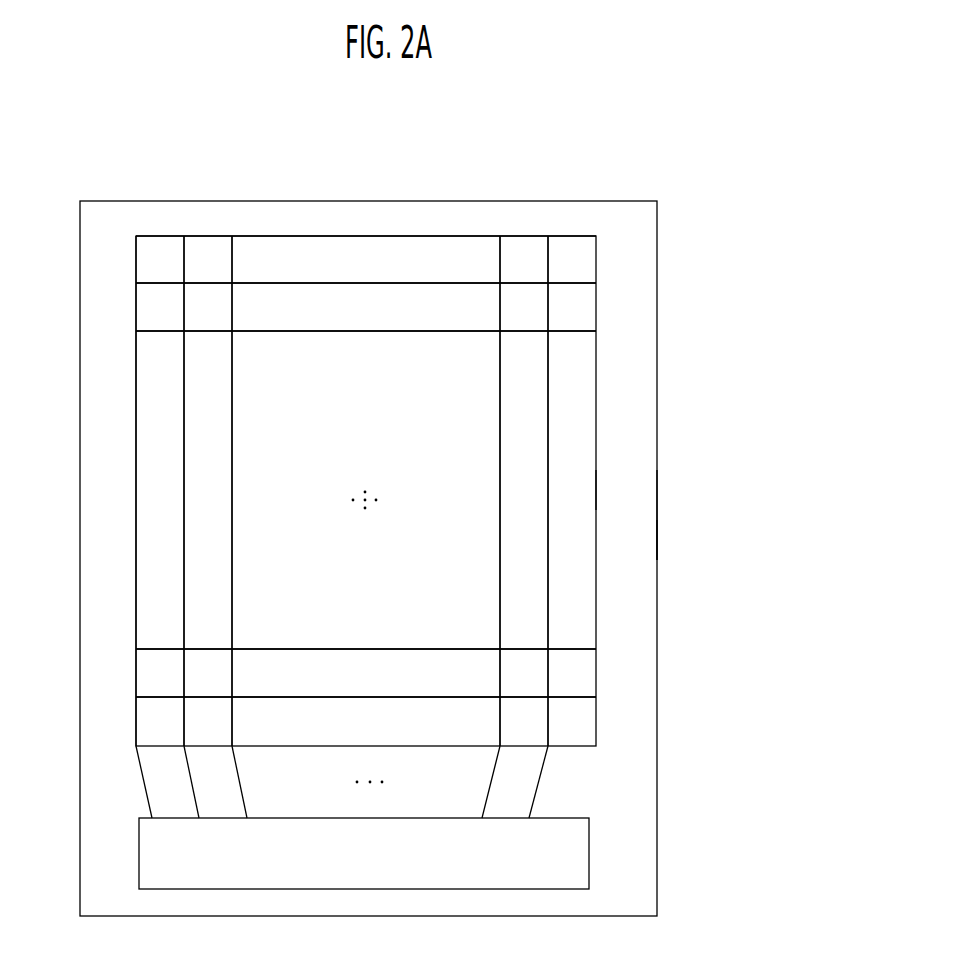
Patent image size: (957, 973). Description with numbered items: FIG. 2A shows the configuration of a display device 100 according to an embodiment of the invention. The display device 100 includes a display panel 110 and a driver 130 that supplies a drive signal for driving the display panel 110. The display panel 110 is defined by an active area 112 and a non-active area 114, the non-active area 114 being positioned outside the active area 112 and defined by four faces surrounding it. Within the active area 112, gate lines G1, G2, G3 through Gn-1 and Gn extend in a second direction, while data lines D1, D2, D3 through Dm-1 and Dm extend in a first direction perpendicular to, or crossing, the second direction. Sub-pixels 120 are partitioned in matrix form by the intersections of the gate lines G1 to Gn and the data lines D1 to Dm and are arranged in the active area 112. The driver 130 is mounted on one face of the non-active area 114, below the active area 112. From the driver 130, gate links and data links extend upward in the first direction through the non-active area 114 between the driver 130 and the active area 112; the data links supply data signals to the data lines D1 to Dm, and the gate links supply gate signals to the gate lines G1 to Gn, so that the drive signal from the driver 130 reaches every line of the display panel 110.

The display device 100 is at (615, 101).
The display panel 110 is at (745, 478).
The active area 112 is at (597, 490).
The non-active area 114 is at (657, 537).
The sub-pixels 120 is at (157, 248).
The driver 130 is at (340, 890).
The gate line G1 is at (344, 236).
The gate line G2 is at (372, 283).
The gate line G3 is at (435, 332).
The gate line Gn-1 is at (280, 649).
The gate line Gn is at (313, 677).
The data line D1 is at (136, 423).
The data line D2 is at (184, 490).
The data line D3 is at (232, 543).
The data line Dm-1 is at (499, 603).
The data line Dm is at (547, 687).